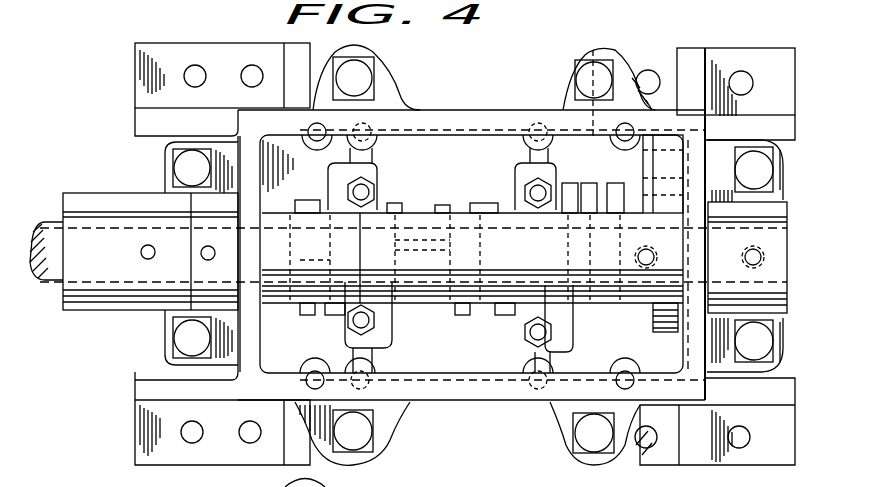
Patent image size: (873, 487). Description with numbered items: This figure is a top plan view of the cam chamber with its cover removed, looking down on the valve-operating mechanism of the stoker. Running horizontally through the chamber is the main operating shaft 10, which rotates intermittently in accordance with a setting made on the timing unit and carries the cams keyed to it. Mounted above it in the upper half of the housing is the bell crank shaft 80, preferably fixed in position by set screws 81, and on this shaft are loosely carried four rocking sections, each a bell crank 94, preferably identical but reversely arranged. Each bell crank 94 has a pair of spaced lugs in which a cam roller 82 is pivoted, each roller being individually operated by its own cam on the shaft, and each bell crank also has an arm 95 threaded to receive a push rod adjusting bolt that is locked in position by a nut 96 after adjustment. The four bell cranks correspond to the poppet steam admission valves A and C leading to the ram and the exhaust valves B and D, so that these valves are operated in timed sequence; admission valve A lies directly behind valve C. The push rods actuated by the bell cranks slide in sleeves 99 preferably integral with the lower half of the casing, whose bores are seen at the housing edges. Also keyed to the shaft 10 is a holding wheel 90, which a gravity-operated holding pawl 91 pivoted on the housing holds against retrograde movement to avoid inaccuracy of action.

The main operating shaft 10 is at (48, 280).
The bell crank shaft 80 is at (96, 288).
The set screws 81 is at (290, 305).
The cam rollers 82 is at (308, 305).
The holding wheel 90 is at (655, 318).
The holding pawl 91 is at (663, 190).
The bell crank 94 is at (437, 216).
The arm 95 is at (377, 181).
The nut 96 is at (380, 193).
The sleeve 99 is at (552, 166).
The steam admission valve A is at (340, 190).
The exhaust valve B is at (560, 322).
The steam admission valve C is at (378, 320).
The exhaust valve D is at (560, 182).